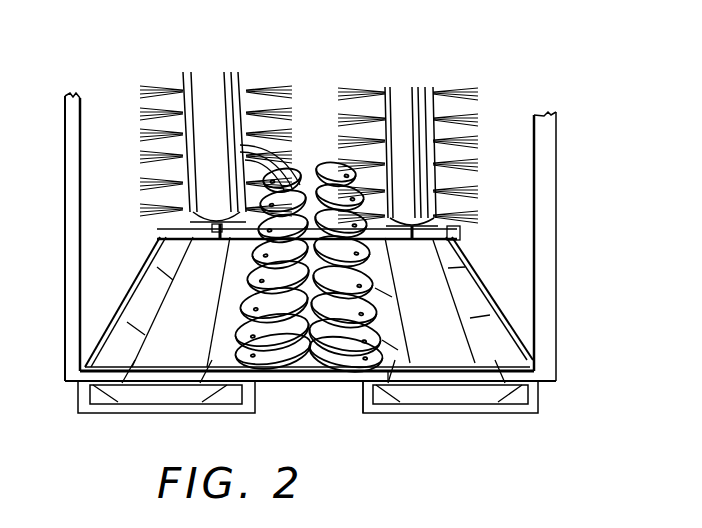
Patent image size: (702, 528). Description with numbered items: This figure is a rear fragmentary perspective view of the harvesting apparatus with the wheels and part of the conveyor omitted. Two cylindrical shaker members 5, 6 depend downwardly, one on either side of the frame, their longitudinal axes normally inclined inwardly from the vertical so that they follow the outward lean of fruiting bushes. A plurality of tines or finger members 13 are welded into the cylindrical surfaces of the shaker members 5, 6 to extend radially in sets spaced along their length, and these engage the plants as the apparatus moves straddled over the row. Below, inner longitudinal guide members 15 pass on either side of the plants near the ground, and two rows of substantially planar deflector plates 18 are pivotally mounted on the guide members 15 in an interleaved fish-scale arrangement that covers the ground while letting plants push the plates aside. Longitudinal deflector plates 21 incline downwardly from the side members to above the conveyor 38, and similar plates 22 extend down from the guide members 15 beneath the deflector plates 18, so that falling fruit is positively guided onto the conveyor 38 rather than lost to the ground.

The cylindrical shaker member 5 is at (208, 80).
The cylindrical shaker member 6 is at (407, 87).
The tines or finger members 13 is at (473, 167).
The inner longitudinal guide member 15 is at (363, 397).
The deflector plate 18 is at (282, 340).
The longitudinal deflector plate 21 is at (502, 390).
The deflector plate 22 is at (394, 355).
The conveyor 38 is at (455, 392).